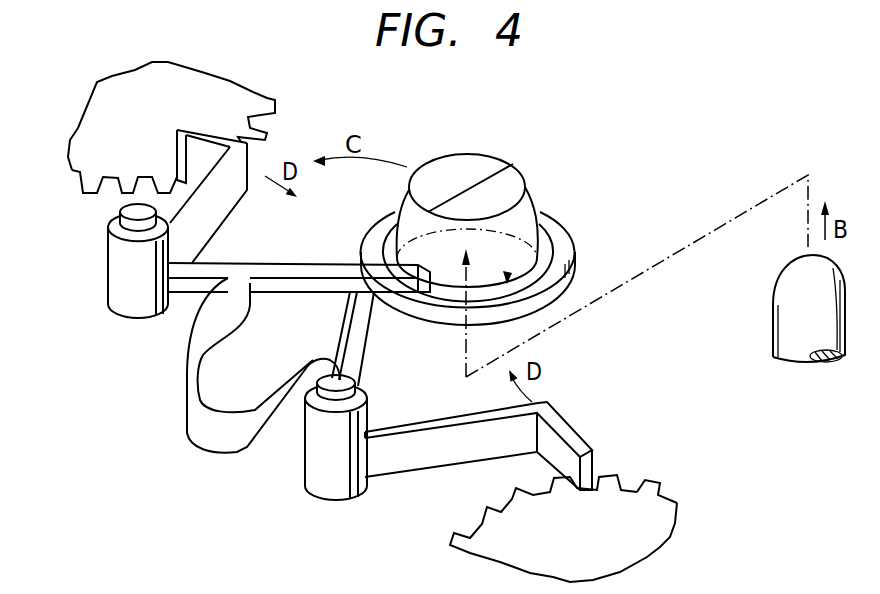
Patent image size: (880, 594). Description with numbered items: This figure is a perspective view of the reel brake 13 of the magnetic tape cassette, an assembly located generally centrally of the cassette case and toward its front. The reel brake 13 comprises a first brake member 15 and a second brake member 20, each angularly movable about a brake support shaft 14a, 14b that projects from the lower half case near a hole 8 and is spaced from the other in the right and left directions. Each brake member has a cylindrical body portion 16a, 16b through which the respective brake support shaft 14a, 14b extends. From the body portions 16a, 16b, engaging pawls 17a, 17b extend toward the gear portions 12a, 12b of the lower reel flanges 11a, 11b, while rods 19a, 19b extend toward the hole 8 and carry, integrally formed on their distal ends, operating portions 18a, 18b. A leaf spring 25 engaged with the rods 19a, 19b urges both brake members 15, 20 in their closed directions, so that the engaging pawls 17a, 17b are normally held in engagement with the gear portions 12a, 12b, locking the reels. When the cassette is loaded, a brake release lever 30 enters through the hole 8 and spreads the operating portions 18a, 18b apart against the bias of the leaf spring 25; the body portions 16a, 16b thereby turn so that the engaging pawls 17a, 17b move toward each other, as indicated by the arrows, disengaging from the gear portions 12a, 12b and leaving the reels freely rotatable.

The hole 8 is at (525, 243).
The lower reel flange 11a is at (138, 80).
The lower reel flange 11b is at (647, 517).
The gear portion 12a is at (267, 96).
The gear portion 12b is at (650, 486).
The reel brake 13 is at (317, 128).
The brake support shaft 14a is at (133, 210).
The brake support shaft 14b is at (347, 387).
The first brake member 15 is at (222, 247).
The cylindrical body portion 16a is at (127, 273).
The cylindrical body portion 16b is at (328, 475).
The engaging pawl 17a is at (187, 153).
The engaging pawl 17b is at (563, 430).
The operating portion 18a is at (468, 168).
The operating portion 18b is at (513, 187).
The rod 19a is at (297, 280).
The rod 19b is at (353, 352).
The second brake member 20 is at (427, 485).
The leaf spring 25 is at (227, 435).
The brake release lever 30 is at (790, 294).